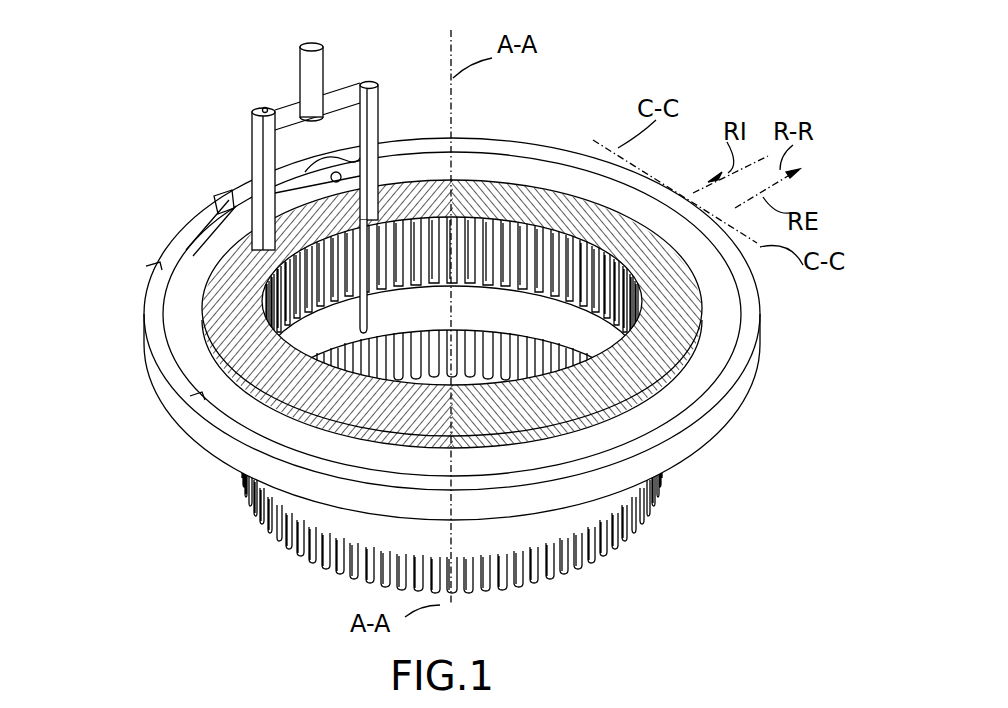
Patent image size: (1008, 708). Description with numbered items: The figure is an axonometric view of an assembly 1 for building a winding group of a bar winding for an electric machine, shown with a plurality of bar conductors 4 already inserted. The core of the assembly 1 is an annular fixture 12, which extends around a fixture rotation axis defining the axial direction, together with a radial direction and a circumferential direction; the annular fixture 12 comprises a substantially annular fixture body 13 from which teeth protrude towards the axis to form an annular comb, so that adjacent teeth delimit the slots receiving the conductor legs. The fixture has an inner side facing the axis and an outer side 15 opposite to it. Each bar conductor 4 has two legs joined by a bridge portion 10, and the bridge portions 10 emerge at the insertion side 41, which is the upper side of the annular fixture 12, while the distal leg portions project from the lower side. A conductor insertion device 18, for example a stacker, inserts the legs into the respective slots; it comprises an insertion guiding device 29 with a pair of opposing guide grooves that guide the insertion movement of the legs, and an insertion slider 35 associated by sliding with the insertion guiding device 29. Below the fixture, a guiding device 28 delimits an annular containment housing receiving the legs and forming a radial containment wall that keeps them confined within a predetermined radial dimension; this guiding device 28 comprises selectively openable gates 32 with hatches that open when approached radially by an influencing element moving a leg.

The assembly 1 is at (205, 192).
The bar conductor 4 is at (250, 238).
The bridge portion 10 is at (343, 165).
The annular fixture 12 is at (752, 363).
The fixture body 13 is at (214, 398).
The outer side 15 is at (752, 410).
The conductor insertion device 18 is at (293, 103).
The guiding device 28 is at (627, 533).
The insertion guiding device 29 is at (263, 107).
The gate 32 is at (217, 305).
The insertion slider 35 is at (293, 152).
The insertion side 41 is at (530, 134).